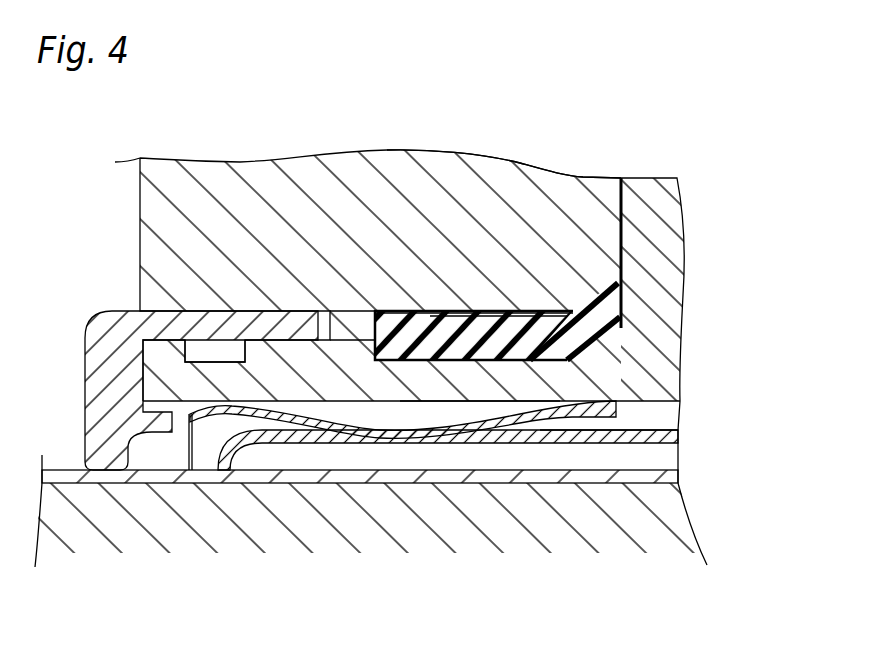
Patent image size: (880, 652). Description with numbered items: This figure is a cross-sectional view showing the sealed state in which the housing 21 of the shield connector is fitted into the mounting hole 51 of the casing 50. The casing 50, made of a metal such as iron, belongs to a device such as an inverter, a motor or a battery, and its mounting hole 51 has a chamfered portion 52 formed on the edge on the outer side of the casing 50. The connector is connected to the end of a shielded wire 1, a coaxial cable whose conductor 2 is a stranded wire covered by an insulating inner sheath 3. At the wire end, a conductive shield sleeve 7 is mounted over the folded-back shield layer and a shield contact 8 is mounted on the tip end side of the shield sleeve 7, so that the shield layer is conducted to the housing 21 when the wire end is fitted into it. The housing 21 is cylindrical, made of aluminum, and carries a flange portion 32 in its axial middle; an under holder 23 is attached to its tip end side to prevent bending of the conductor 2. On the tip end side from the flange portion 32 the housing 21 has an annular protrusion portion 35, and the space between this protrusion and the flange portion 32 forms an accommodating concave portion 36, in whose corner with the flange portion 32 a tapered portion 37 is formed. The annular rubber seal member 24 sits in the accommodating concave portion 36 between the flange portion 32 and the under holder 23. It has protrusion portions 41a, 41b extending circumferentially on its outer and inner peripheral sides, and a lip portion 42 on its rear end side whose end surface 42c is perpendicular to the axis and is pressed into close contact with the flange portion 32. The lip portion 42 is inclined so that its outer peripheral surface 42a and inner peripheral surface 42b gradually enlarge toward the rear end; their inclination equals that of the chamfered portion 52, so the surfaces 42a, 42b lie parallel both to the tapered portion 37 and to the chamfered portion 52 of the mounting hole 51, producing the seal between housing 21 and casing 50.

The shielded wire 1 is at (660, 462).
The conductor 2 is at (253, 520).
The inner sheath 3 is at (68, 467).
The shield sleeve 7 is at (232, 443).
The shield contact 8 is at (213, 410).
The housing 21 is at (263, 322).
The under holder 23 is at (88, 309).
The seal member 24 is at (387, 302).
The flange portion 32 is at (655, 205).
The annular protrusion portion 35 is at (345, 311).
The accommodating concave portion 36 is at (365, 401).
The tapered portion 37 is at (553, 432).
The protrusion portion 41a is at (403, 360).
The protrusion portion 41b is at (455, 403).
The lip portion 42 is at (622, 332).
The outer peripheral surface 42a is at (553, 330).
The inner peripheral surface 42b is at (633, 401).
The end surface 42c is at (622, 310).
The casing 50 is at (578, 180).
The mounting hole 51 is at (197, 325).
The chamfered portion 52 is at (613, 322).